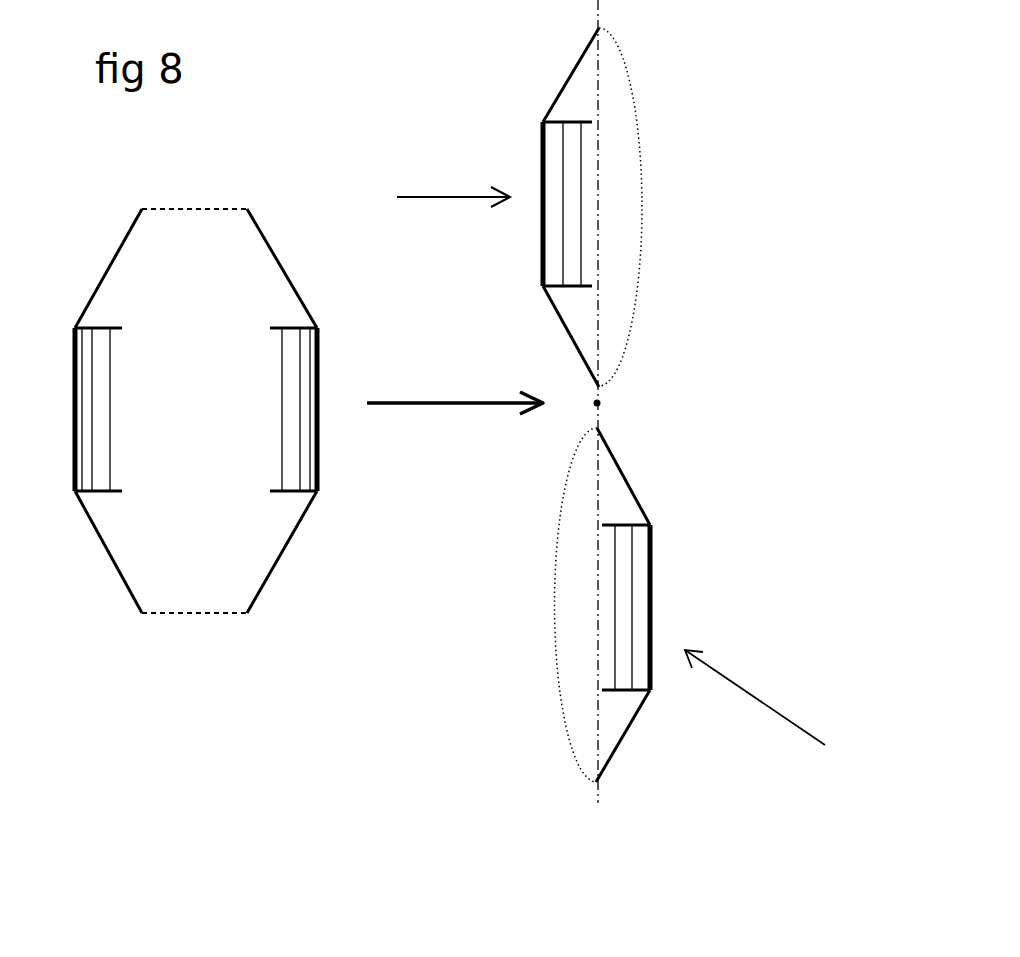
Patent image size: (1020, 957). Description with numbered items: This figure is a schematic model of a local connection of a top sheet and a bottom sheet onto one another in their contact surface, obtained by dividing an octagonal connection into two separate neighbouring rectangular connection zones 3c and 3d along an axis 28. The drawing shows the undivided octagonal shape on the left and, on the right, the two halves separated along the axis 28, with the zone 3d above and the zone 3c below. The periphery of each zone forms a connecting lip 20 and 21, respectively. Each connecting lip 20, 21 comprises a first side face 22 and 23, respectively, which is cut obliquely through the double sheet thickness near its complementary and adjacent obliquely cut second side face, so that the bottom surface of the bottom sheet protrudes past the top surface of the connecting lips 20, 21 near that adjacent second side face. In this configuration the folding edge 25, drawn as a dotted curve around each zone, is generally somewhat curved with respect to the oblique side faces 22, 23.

The connecting lip 20 is at (578, 605).
The connecting lip 21 is at (617, 217).
The first side face 22 is at (632, 605).
The first side face 23 is at (562, 241).
The folding edge 25 is at (635, 295).
The axis 28 is at (597, 403).
The rectangular connection zone 3c is at (774, 715).
The rectangular connection zone 3d is at (428, 199).